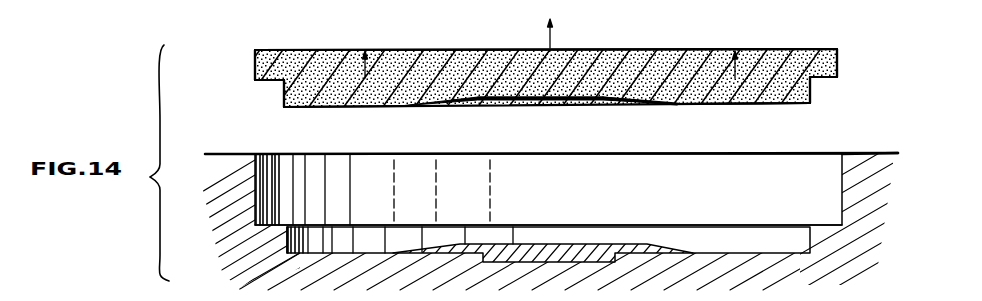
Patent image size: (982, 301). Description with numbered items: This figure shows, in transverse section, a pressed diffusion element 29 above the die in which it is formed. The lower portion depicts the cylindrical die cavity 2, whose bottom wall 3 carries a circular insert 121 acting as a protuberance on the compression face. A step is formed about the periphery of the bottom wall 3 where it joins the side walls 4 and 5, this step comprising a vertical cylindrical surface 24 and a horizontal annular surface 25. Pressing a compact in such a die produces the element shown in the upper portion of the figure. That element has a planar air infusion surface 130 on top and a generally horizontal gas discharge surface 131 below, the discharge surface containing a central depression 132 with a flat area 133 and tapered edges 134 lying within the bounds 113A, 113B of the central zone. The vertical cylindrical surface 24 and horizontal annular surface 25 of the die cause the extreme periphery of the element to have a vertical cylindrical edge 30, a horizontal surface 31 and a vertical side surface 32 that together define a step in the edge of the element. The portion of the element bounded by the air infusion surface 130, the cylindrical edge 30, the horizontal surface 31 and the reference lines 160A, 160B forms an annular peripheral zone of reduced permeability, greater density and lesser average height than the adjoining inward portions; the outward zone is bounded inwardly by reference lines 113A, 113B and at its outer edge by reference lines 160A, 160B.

The molded article / plate 29 is at (263, 42).
The planar air infusion surface 130 is at (503, 49).
The reference line 160A is at (303, 35).
The reference line 160B is at (802, 47).
The reference line 113A is at (378, 50).
The reference line 113B is at (723, 52).
The vertical cylindrical edge 30 is at (255, 69).
The horizontal surface 31 is at (262, 82).
The vertical side surface 32 is at (283, 97).
The gas discharge surface 131 is at (335, 105).
The depression 132 is at (526, 110).
The flat area 133 is at (607, 102).
The tapered edges 134 is at (665, 104).
The die cavity 2 is at (797, 197).
The side wall 5 is at (842, 180).
The side wall 4 is at (255, 198).
The horizontal annular surface 25 is at (268, 228).
The bottom wall 3 is at (358, 254).
The vertical cylindrical surface 24 is at (286, 251).
The insert 121 is at (553, 249).